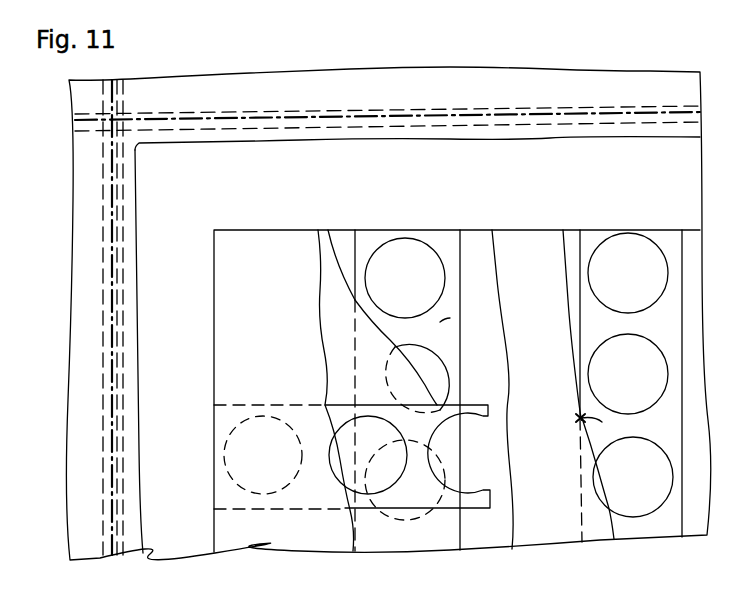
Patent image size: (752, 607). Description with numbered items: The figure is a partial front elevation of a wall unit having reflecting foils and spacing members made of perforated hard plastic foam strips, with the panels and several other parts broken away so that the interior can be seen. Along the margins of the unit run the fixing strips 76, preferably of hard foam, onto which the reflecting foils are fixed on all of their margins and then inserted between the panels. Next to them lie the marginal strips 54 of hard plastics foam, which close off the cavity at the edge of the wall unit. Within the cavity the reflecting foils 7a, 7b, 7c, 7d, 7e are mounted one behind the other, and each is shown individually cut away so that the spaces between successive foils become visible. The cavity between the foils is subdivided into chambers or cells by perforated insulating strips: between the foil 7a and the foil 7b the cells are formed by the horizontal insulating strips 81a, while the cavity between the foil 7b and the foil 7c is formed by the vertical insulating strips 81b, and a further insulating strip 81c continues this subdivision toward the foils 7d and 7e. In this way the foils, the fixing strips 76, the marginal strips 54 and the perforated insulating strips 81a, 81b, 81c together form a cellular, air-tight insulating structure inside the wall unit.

The marginal strip 54 is at (337, 94).
The fixing strip 76 is at (455, 148).
The reflecting foil 7a is at (263, 243).
The reflecting foil 7b is at (330, 240).
The reflecting foil 7c is at (475, 238).
The reflecting foil 7d is at (547, 237).
The reflecting foil 7e is at (690, 230).
The horizontal insulating strip 81a is at (490, 490).
The vertical insulating strip 81b is at (445, 322).
The insulating strip 81c is at (580, 418).